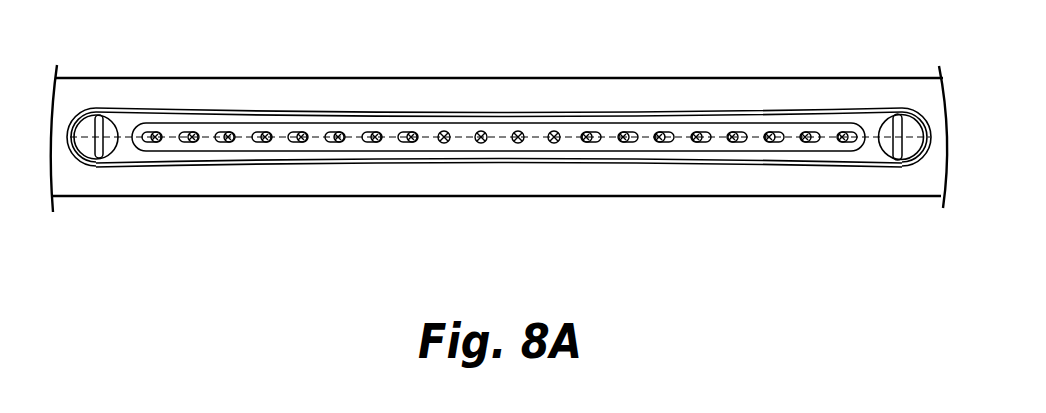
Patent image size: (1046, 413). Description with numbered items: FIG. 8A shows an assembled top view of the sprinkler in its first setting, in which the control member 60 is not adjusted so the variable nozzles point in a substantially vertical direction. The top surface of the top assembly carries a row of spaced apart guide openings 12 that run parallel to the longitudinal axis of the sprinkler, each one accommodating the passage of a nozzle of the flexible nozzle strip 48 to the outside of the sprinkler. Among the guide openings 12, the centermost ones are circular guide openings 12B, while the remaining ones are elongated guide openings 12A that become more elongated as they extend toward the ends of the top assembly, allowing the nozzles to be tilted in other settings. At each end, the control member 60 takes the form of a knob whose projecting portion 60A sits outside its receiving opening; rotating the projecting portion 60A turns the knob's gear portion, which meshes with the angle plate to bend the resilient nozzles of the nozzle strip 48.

The guide openings 12 is at (554, 132).
The elongated guide openings 12A is at (441, 132).
The circular guide openings 12B is at (212, 97).
The nozzle strip 48 is at (698, 132).
The control member 60 is at (895, 123).
The projecting portion 60A is at (98, 123).